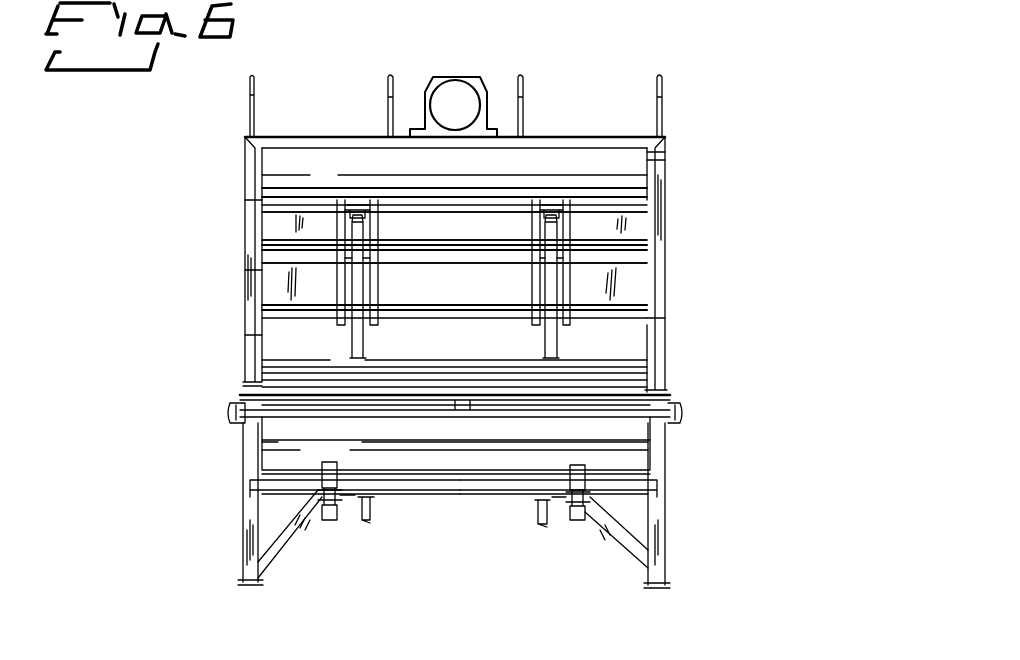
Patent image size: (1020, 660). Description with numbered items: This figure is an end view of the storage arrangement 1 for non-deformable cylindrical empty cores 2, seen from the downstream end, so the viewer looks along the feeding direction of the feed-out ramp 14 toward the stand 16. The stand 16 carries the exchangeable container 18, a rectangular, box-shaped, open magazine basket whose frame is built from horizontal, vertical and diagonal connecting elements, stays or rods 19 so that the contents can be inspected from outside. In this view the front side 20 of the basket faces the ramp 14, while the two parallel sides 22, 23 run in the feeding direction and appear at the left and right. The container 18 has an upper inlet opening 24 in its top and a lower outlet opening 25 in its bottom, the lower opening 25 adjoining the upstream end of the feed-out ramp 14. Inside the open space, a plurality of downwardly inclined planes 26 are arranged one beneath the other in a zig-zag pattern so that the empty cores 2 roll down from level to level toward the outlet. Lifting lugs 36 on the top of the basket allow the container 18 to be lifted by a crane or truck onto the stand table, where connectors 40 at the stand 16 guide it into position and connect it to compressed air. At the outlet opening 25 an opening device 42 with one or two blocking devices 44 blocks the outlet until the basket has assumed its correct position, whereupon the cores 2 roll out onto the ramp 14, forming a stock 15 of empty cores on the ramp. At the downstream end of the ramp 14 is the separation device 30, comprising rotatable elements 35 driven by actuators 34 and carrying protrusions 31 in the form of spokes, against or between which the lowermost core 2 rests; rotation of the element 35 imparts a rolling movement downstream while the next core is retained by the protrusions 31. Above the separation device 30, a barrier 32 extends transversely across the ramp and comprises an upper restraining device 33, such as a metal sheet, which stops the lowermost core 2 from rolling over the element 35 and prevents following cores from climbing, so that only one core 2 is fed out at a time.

The storage arrangement 1 is at (224, 550).
The empty core 2 is at (574, 160).
The feed-out ramp 14 is at (648, 490).
The stock of empty cores 15 is at (624, 382).
The stand 16 is at (238, 283).
The container 18 is at (238, 223).
The connecting elements, stays or rods 19 is at (660, 163).
The front side 20 is at (310, 137).
The parallel side 22 is at (238, 344).
The parallel side 23 is at (667, 318).
The upper inlet opening 24 is at (365, 127).
The lower outlet opening 25 is at (456, 361).
The inclined planes or ramps 26 is at (648, 278).
The separation device 30 is at (330, 520).
The protrusions 31 is at (262, 472).
The barrier 32 is at (625, 415).
The restraining device 33 is at (600, 410).
The actuators 34 is at (368, 522).
The rotatable element 35 is at (577, 522).
The lifting lugs 36 is at (478, 85).
The connectors 40 is at (678, 409).
The opening device 42 is at (370, 283).
The blocking device 44 is at (548, 345).